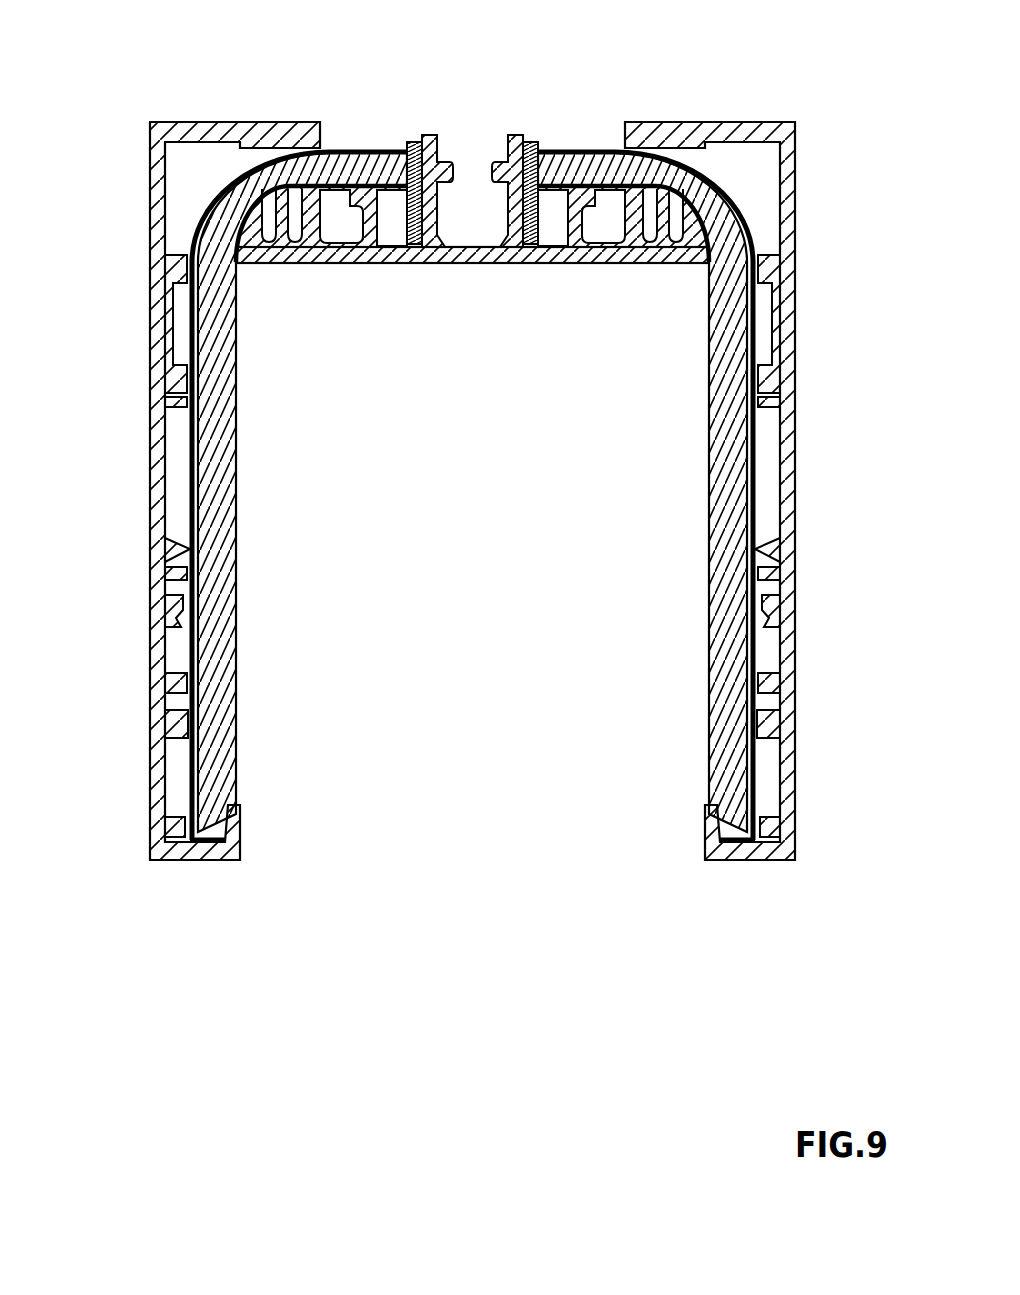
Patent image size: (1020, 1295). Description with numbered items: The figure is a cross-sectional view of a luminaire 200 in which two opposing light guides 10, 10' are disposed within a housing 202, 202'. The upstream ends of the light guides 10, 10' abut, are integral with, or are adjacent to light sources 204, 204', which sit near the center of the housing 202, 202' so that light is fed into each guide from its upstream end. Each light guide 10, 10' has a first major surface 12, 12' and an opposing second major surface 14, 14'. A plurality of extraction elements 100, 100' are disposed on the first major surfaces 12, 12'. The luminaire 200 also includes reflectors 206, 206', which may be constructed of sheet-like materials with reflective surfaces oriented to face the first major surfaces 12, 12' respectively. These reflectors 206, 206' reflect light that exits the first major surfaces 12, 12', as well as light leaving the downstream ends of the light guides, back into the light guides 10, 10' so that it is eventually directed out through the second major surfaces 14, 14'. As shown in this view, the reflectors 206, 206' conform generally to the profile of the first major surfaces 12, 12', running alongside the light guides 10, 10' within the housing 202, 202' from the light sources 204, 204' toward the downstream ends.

The luminaire 200 is at (470, 78).
The housing 202 is at (429, 450).
The housing 202' is at (666, 450).
The light source 204 is at (369, 144).
The light source 204' is at (577, 144).
The reflector 206 is at (110, 546).
The reflector 206' is at (839, 546).
The light guide 10 is at (218, 496).
The light guide 10' is at (731, 496).
The first major surface 12 is at (228, 496).
The first major surface 12' is at (722, 496).
The second major surface 14 is at (302, 492).
The second major surface 14' is at (642, 492).
The extraction elements 100 is at (218, 496).
The extraction elements 100' is at (731, 496).